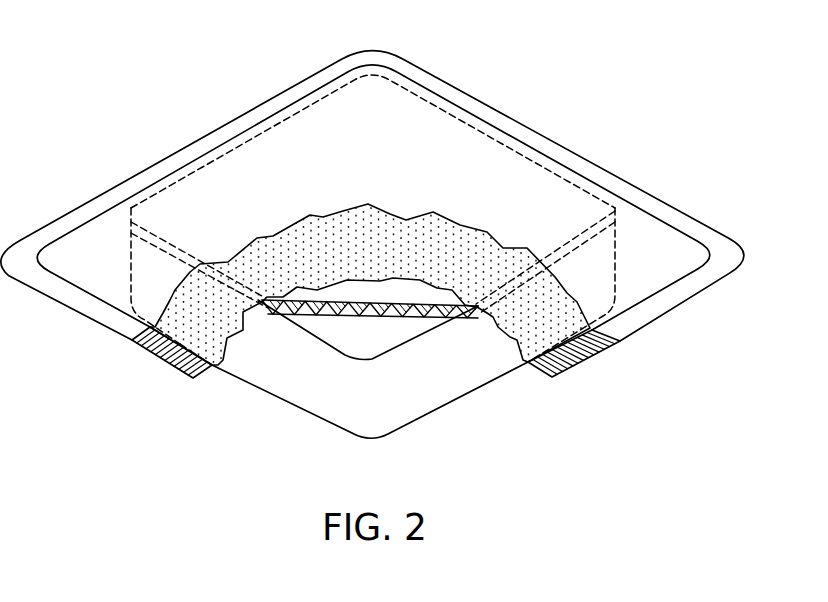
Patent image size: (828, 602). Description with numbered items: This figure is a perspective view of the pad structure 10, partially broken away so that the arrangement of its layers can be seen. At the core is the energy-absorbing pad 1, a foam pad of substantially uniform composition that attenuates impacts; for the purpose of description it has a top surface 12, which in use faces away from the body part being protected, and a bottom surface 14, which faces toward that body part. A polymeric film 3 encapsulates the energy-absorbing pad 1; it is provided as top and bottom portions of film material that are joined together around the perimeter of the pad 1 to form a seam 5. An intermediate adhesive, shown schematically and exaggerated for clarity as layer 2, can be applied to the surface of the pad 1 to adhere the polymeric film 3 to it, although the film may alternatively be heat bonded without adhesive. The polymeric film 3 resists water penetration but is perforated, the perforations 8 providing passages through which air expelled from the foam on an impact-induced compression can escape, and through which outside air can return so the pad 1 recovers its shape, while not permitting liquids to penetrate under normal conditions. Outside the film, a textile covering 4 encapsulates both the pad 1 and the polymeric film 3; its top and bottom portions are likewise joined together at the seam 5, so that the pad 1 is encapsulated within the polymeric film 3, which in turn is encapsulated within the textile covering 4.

The energy-absorbing pad 1 is at (418, 412).
The adhesive layer 2 is at (397, 300).
The polymeric film 3 is at (187, 372).
The textile covering 4 is at (277, 152).
The seam 5 is at (582, 361).
The perforations 8 is at (450, 267).
The pad structure 10 is at (111, 54).
The top surface 12 is at (350, 337).
The bottom surface 14 is at (160, 348).